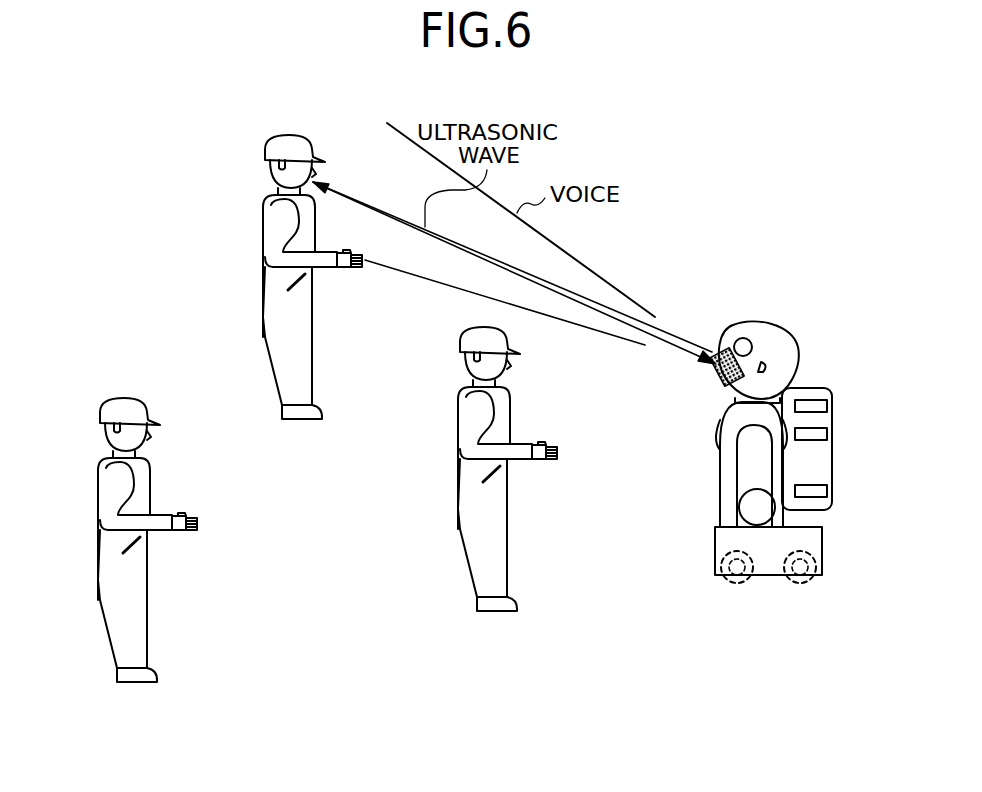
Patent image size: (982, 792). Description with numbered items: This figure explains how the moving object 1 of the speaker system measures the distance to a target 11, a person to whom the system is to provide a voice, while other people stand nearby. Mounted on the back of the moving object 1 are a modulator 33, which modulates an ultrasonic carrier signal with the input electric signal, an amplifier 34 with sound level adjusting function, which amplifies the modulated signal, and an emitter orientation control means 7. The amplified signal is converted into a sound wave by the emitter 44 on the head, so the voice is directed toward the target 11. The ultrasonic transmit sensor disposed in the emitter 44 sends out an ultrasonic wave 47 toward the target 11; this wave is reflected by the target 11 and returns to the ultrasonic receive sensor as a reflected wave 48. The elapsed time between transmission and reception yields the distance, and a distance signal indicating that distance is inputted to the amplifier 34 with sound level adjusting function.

The robot 1 is at (808, 341).
The emitter orientation control means 7 is at (832, 434).
The target 11 is at (266, 205).
The modulator 33 is at (832, 490).
The amplifier with sound level adjusting function 34 is at (832, 405).
The emitter 44 is at (714, 381).
The ultrasonic wave 47 is at (708, 340).
The reflected wave 48 is at (690, 352).